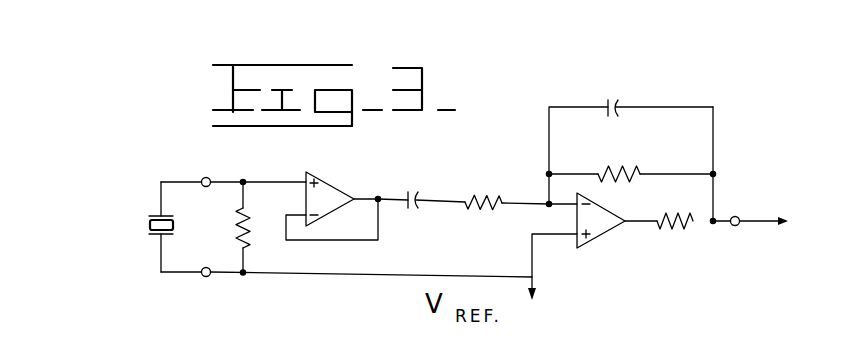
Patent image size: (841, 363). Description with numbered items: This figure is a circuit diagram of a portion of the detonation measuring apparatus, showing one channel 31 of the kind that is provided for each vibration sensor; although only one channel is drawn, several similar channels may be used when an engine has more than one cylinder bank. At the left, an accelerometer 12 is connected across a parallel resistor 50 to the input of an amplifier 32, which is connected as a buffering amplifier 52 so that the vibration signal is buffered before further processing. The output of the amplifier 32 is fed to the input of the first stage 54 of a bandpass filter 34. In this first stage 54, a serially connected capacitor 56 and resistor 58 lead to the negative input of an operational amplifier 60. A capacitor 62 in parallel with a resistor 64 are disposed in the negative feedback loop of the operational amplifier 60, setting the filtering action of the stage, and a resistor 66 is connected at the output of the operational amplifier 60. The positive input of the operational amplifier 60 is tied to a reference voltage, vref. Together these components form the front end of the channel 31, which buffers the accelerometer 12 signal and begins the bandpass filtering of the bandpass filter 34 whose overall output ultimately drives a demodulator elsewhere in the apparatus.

The accelerometer 12 is at (146, 214).
The channel 31 is at (190, 158).
The amplifier 32 is at (330, 185).
The bandpass filter 34 is at (555, 93).
The parallel resistor 50 is at (236, 229).
The buffering amplifier 52 is at (391, 241).
The first stage 54 is at (731, 105).
The capacitor 56 is at (418, 194).
The resistor 58 is at (481, 198).
The operational amplifier 60 is at (600, 226).
The capacitor 62 is at (618, 103).
The resistor 64 is at (627, 172).
The resistor 66 is at (690, 222).